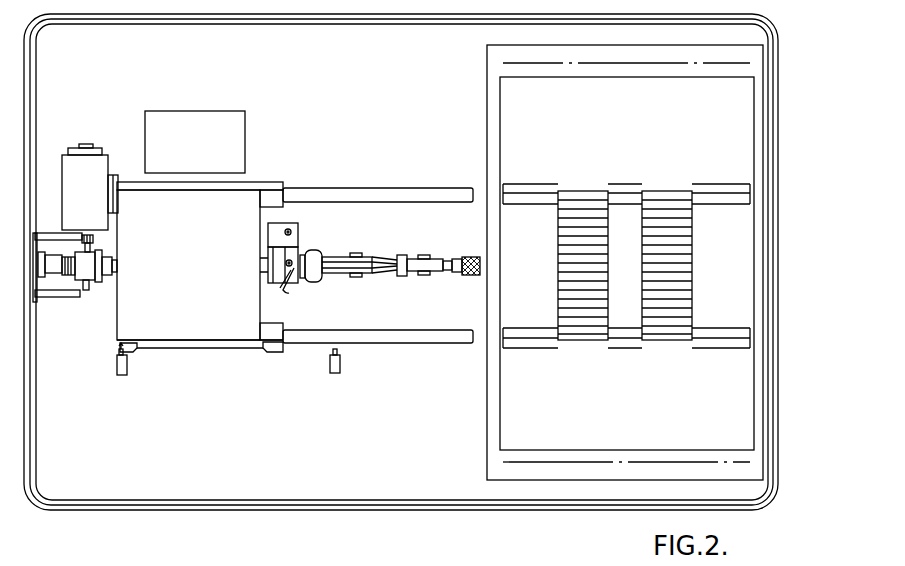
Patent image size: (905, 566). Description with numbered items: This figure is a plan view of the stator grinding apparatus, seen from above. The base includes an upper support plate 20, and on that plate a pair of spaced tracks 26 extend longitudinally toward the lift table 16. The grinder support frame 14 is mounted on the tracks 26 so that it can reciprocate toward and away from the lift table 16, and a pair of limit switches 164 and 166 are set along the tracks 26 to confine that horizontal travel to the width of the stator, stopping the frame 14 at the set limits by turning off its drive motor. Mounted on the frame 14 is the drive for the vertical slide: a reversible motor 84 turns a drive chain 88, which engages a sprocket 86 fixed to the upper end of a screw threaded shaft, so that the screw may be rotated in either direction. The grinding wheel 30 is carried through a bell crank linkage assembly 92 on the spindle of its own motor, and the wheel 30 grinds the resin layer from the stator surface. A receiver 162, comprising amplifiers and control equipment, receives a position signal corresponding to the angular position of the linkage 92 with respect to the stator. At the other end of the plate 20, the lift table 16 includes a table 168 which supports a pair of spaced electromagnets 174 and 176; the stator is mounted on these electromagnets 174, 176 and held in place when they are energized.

The lift table 16 is at (755, 433).
The upper support plate 20 is at (291, 140).
The receiver 162 is at (220, 111).
The grinder support frame 14 is at (205, 293).
The spaced tracks 26 is at (390, 190).
The reversible motor 84 is at (289, 225).
The drive chain 88 is at (295, 245).
The sprocket 86 is at (295, 270).
The bell crank linkage assembly 92 is at (426, 246).
The grinding wheel 30 is at (466, 252).
The electromagnet 174 is at (558, 241).
The electromagnet 176 is at (692, 262).
The table 168 is at (512, 403).
The limit switch 164 is at (117, 365).
The limit switch 166 is at (330, 368).